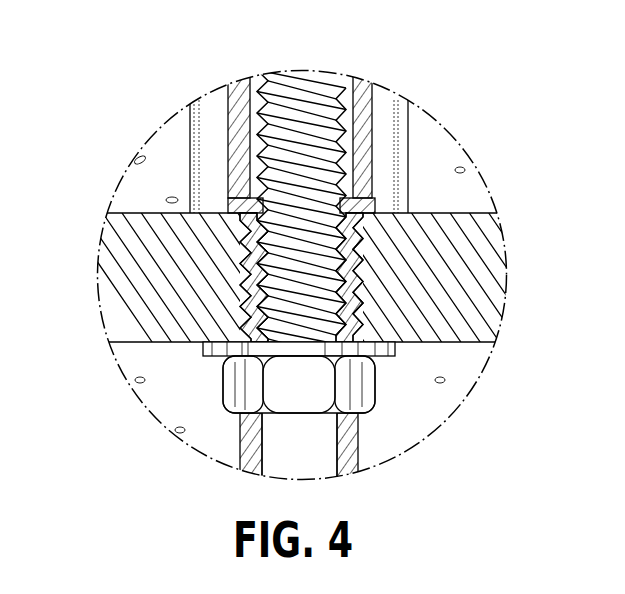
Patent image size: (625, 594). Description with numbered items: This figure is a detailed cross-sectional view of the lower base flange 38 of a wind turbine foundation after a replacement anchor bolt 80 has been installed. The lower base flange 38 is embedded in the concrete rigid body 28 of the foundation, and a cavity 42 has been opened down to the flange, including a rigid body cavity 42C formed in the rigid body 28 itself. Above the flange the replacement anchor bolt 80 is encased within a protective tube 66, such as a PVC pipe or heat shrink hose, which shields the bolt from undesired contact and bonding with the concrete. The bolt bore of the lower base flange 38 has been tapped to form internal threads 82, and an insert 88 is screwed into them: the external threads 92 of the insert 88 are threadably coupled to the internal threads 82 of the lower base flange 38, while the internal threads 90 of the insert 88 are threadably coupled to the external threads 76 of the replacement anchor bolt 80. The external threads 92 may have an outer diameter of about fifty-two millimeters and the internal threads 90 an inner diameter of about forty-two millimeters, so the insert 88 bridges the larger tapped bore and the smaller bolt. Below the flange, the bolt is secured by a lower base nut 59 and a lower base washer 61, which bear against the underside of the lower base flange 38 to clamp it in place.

The rigid body 28 is at (167, 125).
The lower base flange 38 is at (100, 243).
The cavity 42 is at (396, 92).
The rigid body cavity 42C is at (395, 181).
The lower base nut 59 is at (297, 413).
The lower base washer 61 is at (207, 347).
The protective tube 66 is at (236, 88).
The external threads 76 is at (353, 293).
The replacement anchor bolt 80 is at (320, 72).
The internal threads 82 is at (355, 266).
The insert 88 is at (235, 257).
The internal threads 90 is at (328, 360).
The external threads 92 is at (357, 240).